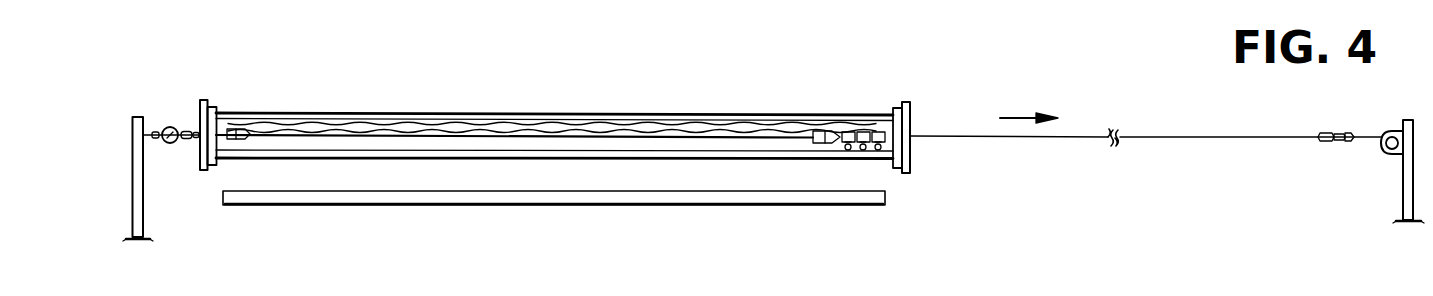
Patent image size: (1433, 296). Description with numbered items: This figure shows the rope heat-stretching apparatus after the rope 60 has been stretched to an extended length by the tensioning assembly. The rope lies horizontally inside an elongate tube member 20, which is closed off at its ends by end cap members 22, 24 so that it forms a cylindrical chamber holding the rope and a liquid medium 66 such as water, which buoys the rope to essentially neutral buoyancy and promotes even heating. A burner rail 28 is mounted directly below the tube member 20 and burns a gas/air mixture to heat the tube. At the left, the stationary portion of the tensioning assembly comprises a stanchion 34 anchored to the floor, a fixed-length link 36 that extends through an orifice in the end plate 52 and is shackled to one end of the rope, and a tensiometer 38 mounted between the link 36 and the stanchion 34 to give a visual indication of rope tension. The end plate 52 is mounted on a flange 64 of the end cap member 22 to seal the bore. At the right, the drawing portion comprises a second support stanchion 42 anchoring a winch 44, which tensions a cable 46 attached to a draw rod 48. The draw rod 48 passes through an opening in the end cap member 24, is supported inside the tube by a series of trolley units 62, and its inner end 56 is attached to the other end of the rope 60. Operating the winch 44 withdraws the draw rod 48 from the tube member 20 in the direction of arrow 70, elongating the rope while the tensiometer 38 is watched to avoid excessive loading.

The tube member 20 is at (355, 113).
The end cap member 22 is at (190, 185).
The end cap member 24 is at (912, 106).
The burner rail 28 is at (781, 198).
The stanchion 34 is at (135, 172).
The fixed-length link 36 is at (240, 120).
The tensiometer 38 is at (163, 127).
The second support stanchion 42 is at (1400, 175).
The winch 44 is at (1381, 151).
The cable 46 is at (1363, 131).
The draw rod 48 is at (1150, 137).
The end plate 52 is at (200, 113).
The inner end 56 is at (828, 118).
The rope 60 is at (441, 136).
The trolley units 62 is at (878, 132).
The flange 64 is at (216, 107).
The liquid medium 66 is at (553, 124).
The arrow 70 is at (1020, 114).